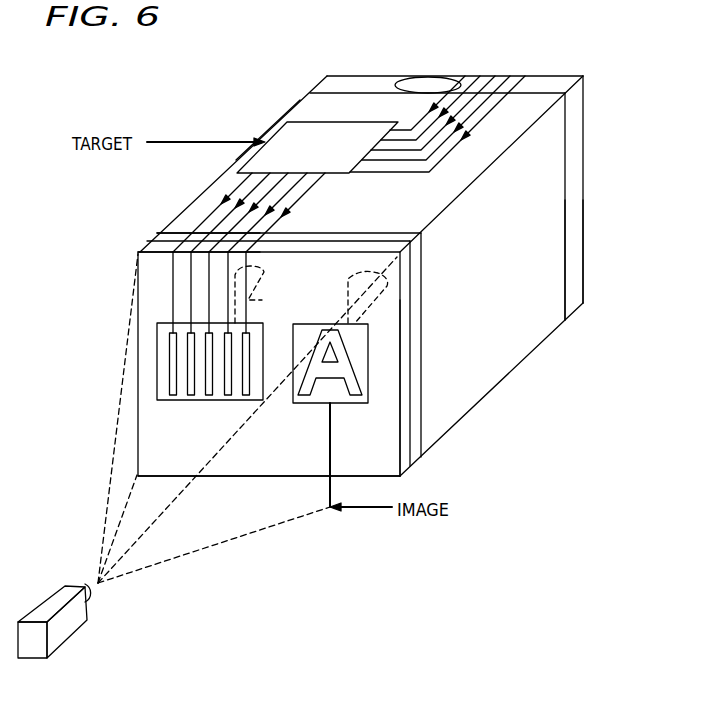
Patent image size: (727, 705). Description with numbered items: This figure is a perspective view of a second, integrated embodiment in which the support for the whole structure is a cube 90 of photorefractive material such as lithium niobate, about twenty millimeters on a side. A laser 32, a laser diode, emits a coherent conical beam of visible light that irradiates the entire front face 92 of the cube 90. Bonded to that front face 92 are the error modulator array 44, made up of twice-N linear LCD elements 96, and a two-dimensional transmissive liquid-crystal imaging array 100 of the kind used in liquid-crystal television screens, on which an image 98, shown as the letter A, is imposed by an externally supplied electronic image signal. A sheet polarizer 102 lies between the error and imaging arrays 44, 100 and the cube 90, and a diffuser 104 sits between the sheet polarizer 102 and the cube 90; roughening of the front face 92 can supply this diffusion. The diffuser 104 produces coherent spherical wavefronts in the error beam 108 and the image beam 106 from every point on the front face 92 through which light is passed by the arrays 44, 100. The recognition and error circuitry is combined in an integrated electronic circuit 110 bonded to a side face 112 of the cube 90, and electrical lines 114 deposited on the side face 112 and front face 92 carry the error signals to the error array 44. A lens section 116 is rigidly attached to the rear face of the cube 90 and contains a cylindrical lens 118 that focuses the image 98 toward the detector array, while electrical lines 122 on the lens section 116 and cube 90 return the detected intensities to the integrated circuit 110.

The laser 32 is at (87, 618).
The error modulator array 44 is at (247, 402).
The cube 90 is at (522, 328).
The front face 92 is at (375, 438).
The linear LCD elements 96 is at (202, 400).
The image 98 is at (305, 403).
The imaging array 100 is at (370, 372).
The sheet polarizer 102 is at (140, 247).
The diffuser 104 is at (165, 237).
The image beam 106 is at (344, 297).
The error beam 108 is at (270, 270).
The integrated electronic circuit 110 is at (338, 156).
The side face 112 is at (302, 110).
The electrical lines 114 is at (233, 190).
The lens section 116 is at (576, 258).
The cylindrical lens 118 is at (440, 81).
The electrical lines 122 is at (450, 158).